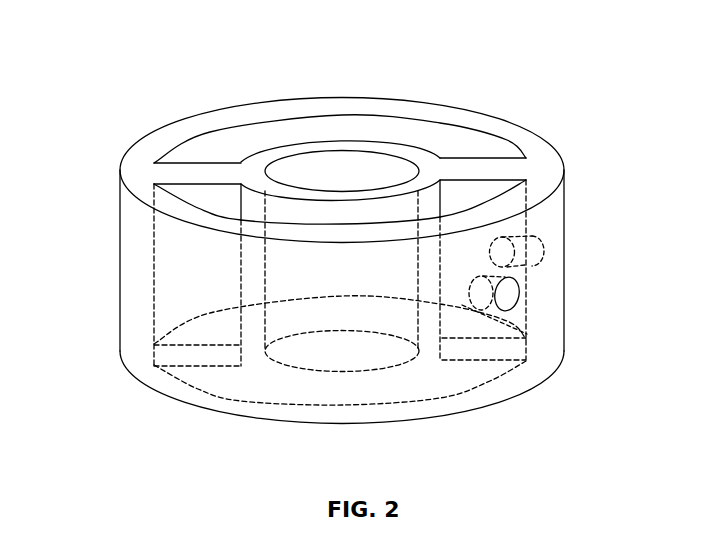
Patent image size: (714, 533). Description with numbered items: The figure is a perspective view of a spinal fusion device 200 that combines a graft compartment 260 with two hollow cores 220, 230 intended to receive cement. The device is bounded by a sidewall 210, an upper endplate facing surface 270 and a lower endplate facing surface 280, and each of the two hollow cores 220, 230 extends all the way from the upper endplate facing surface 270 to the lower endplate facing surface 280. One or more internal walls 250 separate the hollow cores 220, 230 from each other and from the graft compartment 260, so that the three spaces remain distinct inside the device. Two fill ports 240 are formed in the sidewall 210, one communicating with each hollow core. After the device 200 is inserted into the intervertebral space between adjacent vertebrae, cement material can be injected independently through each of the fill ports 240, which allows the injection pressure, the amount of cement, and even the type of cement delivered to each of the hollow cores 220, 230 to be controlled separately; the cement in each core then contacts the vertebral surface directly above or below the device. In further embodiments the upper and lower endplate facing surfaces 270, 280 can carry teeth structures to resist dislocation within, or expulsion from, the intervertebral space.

The spinal fusion device 200 is at (145, 52).
The sidewall 210 is at (104, 297).
The hollow core 220 is at (203, 197).
The hollow core 230 is at (240, 128).
The fill ports 240 is at (519, 293).
The internal walls 250 is at (172, 176).
The graft compartment 260 is at (338, 158).
The upper endplate facing surface 270 is at (430, 93).
The lower endplate facing surface 280 is at (290, 433).